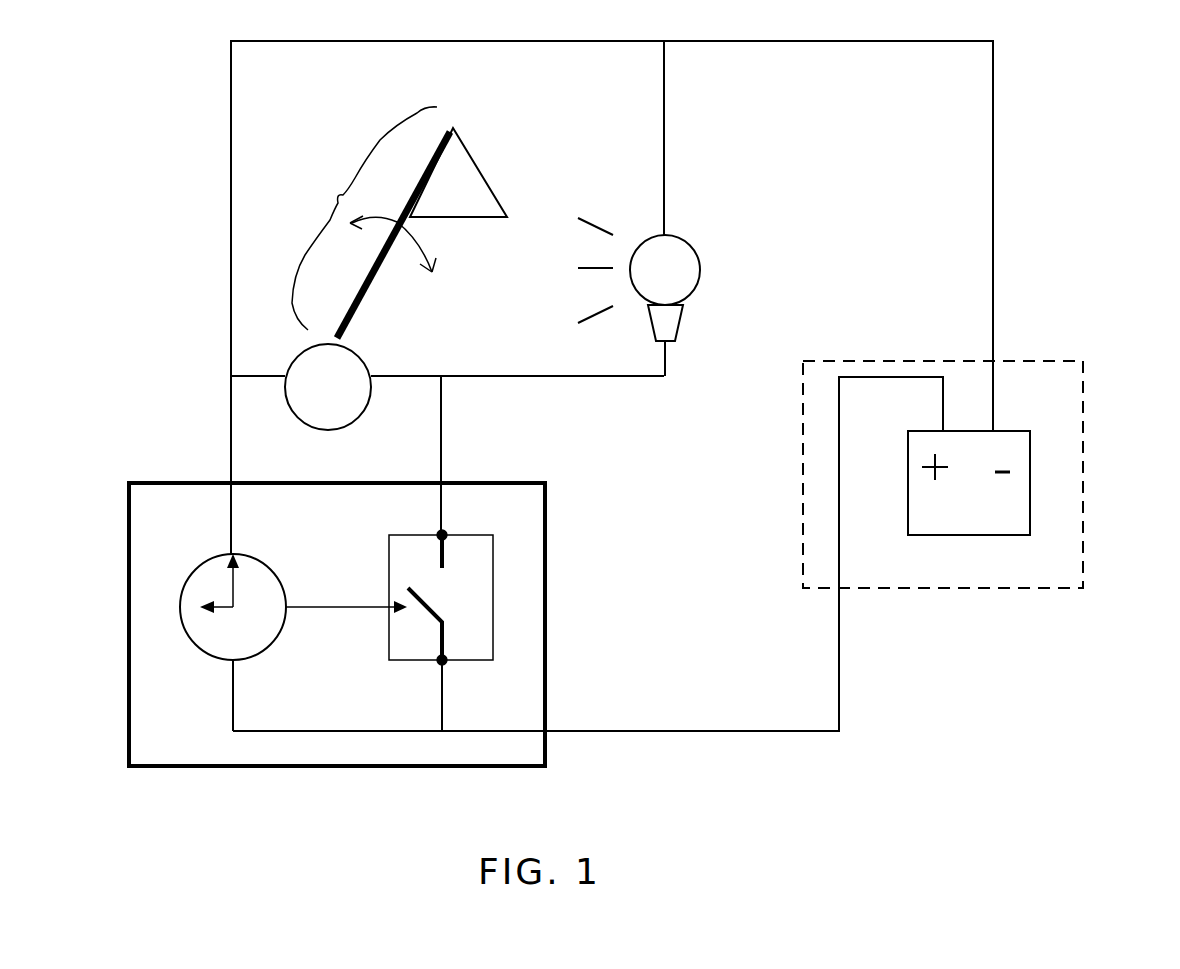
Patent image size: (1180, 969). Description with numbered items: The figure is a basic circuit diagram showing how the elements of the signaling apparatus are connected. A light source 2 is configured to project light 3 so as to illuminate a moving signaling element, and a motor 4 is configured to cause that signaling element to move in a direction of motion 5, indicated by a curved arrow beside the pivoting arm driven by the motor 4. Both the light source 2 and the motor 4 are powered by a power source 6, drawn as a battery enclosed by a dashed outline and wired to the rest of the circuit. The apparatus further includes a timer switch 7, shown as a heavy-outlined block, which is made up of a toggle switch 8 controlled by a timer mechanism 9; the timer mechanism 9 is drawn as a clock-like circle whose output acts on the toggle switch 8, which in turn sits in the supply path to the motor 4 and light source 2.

The light source 2 is at (708, 241).
The light 3 is at (617, 205).
The motor 4 is at (357, 432).
The direction of motion 5 is at (415, 280).
The power source 6 is at (1100, 409).
The timer switch 7 is at (580, 609).
The toggle switch 8 is at (374, 649).
The timer mechanism 9 is at (194, 661).